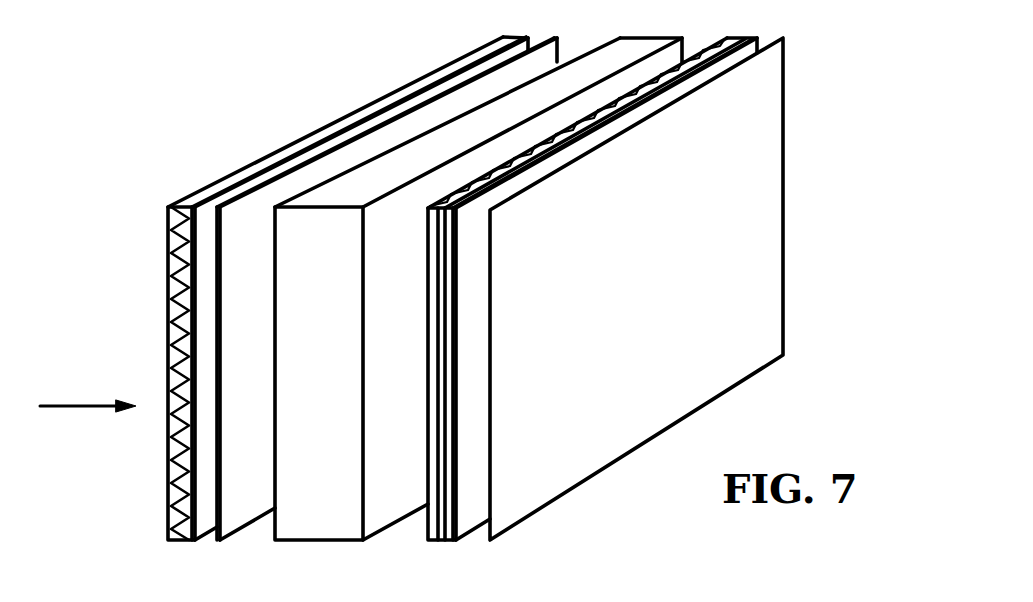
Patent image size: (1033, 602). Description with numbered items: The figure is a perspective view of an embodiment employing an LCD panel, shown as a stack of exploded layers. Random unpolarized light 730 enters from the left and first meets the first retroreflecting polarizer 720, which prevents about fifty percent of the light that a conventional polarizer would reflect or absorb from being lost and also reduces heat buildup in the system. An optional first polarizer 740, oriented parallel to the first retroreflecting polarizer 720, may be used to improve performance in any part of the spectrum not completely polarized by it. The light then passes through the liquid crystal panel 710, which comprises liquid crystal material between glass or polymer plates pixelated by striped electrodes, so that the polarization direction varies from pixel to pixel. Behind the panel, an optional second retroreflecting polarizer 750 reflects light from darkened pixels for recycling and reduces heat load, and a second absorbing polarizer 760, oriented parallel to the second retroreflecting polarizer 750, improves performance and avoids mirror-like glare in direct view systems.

The liquid crystal panel 710 is at (367, 537).
The first retroreflecting polarizer 720 is at (167, 484).
The random unpolarized light 730 is at (82, 402).
The first polarizer 740 is at (232, 532).
The second retroreflecting polarizer 750 is at (443, 543).
The second absorbing polarizer 760 is at (592, 482).